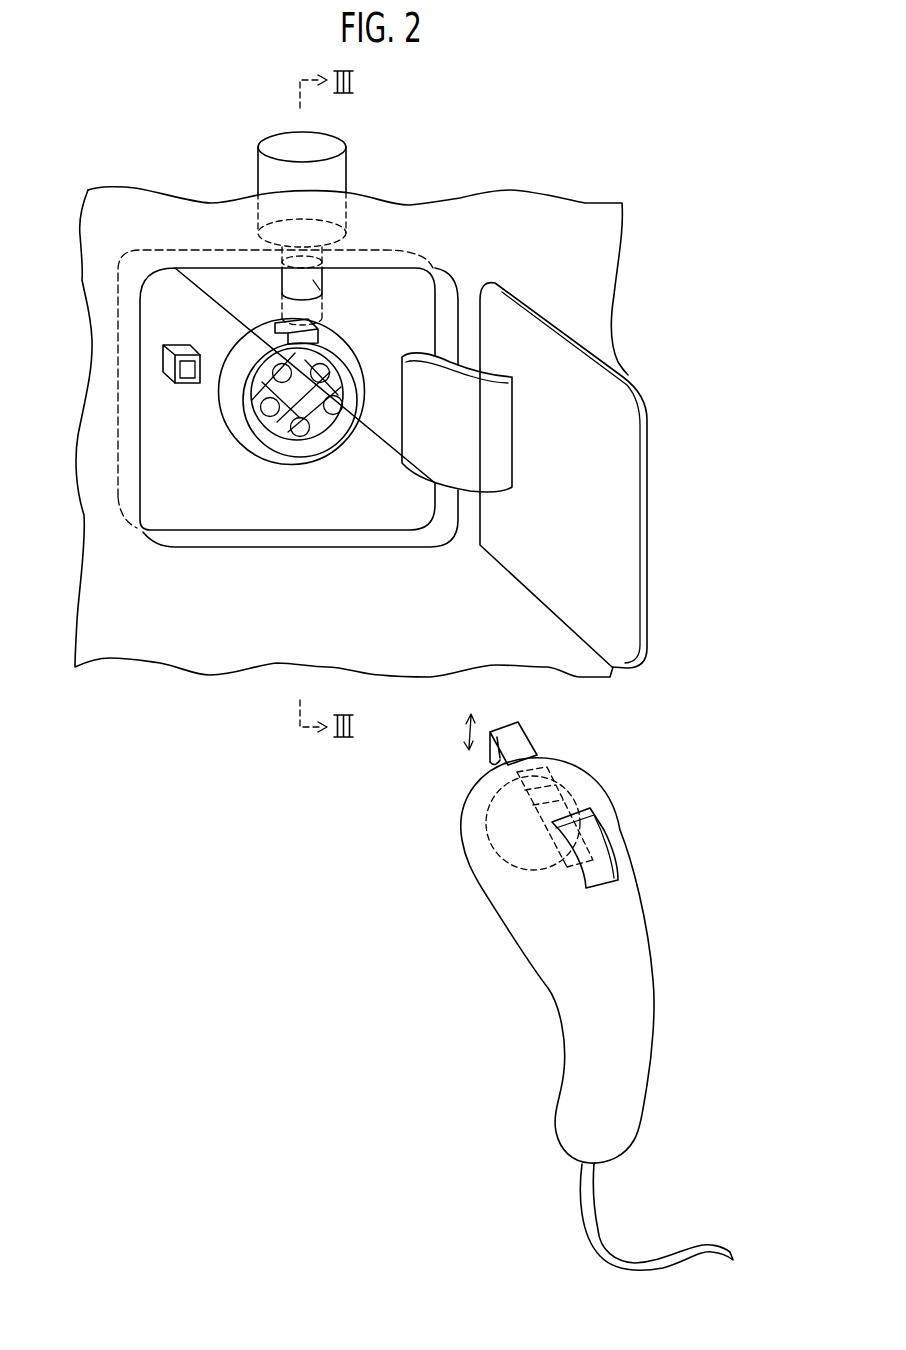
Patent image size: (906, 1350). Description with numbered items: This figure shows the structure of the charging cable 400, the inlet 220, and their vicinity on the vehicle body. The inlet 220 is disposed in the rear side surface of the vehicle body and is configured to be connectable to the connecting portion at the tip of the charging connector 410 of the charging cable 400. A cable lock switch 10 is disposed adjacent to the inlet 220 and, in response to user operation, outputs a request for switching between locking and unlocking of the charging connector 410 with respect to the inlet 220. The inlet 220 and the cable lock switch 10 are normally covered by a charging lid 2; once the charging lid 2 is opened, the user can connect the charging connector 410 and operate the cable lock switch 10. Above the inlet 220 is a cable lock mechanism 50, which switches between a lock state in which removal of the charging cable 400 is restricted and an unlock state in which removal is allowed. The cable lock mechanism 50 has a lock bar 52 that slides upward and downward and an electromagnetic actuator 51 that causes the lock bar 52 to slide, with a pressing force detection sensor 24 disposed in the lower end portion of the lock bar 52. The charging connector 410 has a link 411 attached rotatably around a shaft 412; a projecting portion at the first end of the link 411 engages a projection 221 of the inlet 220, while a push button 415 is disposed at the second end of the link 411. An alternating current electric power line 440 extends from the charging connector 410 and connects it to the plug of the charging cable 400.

The charging lid 2 is at (647, 540).
The cable lock switch 10 is at (185, 350).
The pressing force detection sensor 24 is at (290, 292).
The cable lock mechanism 50 is at (360, 192).
The electromagnetic actuator 51 is at (337, 173).
The lock bar 52 is at (323, 290).
The inlet 220 is at (257, 357).
The projection 221 is at (310, 320).
The charging cable 400 is at (571, 992).
The charging connector 410 is at (650, 938).
The link 411 is at (490, 763).
The shaft 412 is at (580, 770).
The push button 415 is at (605, 818).
The alternating current electric power line 440 is at (590, 1218).